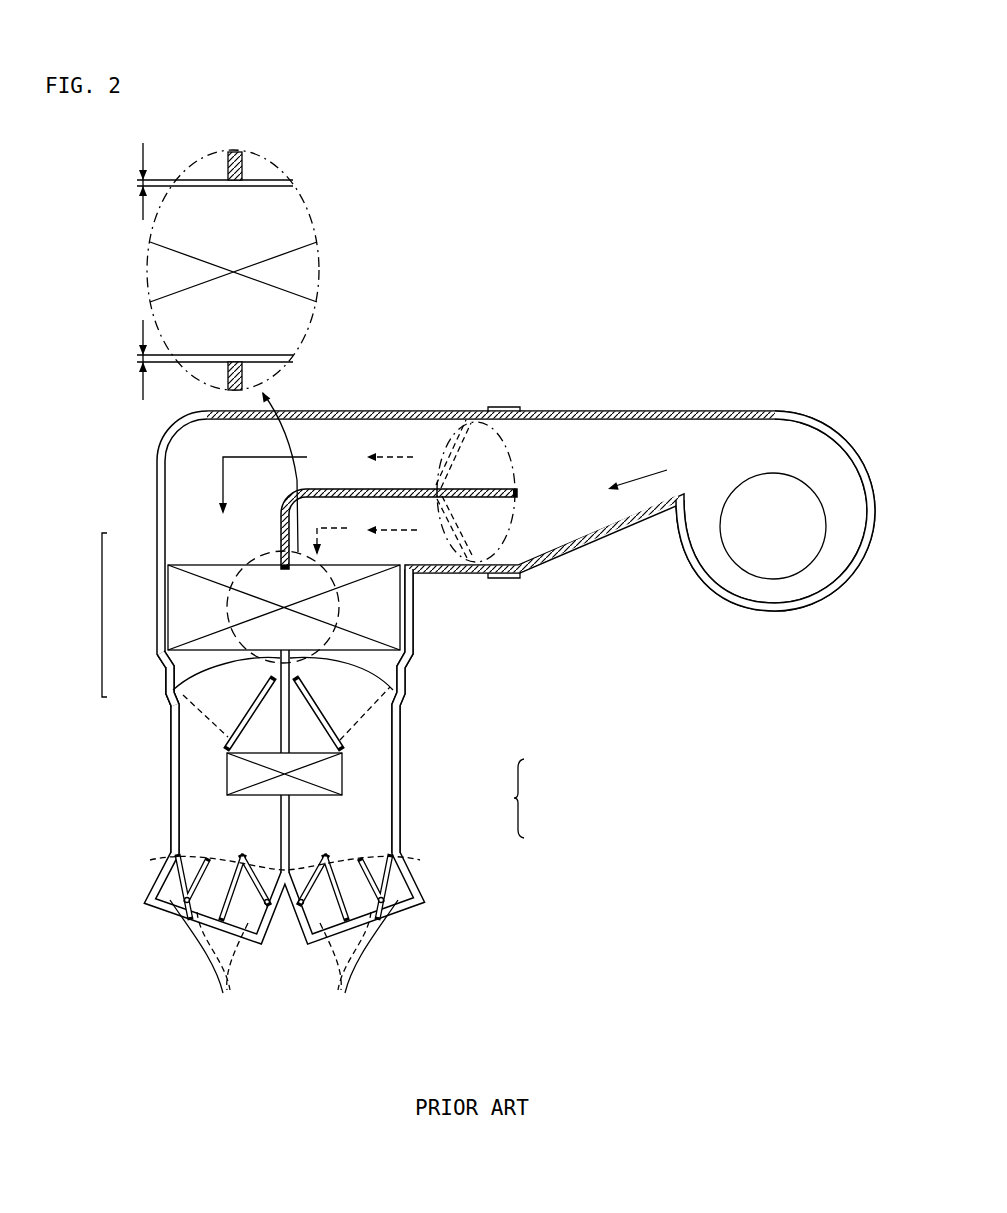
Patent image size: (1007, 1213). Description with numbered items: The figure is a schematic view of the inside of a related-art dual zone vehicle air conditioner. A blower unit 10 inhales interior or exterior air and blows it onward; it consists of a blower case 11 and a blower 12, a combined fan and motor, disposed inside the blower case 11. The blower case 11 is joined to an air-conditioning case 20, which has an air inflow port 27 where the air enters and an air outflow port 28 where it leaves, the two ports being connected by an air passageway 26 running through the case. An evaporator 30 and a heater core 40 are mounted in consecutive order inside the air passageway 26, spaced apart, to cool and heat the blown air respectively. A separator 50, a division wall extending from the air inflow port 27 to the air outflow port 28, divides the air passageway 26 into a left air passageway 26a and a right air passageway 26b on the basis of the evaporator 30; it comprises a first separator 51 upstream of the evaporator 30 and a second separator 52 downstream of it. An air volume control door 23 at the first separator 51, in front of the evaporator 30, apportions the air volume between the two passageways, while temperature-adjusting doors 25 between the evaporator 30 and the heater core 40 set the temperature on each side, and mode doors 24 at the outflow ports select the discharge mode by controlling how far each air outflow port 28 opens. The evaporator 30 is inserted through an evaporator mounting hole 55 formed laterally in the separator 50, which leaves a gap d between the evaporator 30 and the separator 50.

The blower unit 10 is at (832, 620).
The blower case 11 is at (722, 411).
The blower 12 is at (772, 580).
The air-conditioning case 20 is at (398, 731).
The air volume control door 23 is at (478, 484).
The mode doors 24 is at (177, 862).
The temperature-adjusting doors 25 is at (240, 700).
The air passageway 26 is at (536, 798).
The left air passageway 26a is at (252, 838).
The right air passageway 26b is at (378, 772).
The air inflow port 27 is at (483, 577).
The air outflow port 28 is at (284, 961).
The evaporator 30 is at (390, 628).
The heater core 40 is at (227, 772).
The separator 50 is at (87, 615).
The first separator 51 is at (283, 520).
The second separator 52 is at (167, 700).
The evaporator mounting hole 55 is at (245, 180).